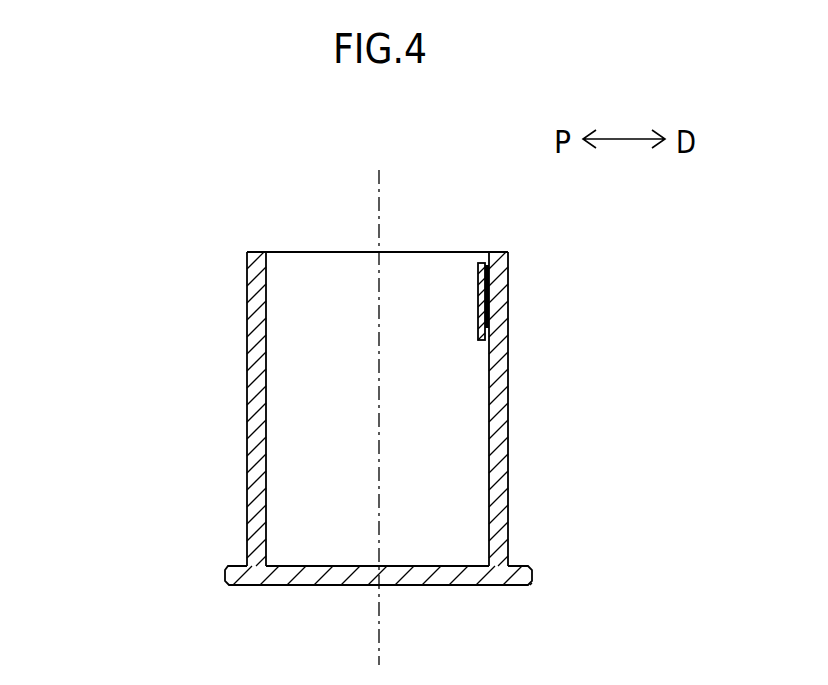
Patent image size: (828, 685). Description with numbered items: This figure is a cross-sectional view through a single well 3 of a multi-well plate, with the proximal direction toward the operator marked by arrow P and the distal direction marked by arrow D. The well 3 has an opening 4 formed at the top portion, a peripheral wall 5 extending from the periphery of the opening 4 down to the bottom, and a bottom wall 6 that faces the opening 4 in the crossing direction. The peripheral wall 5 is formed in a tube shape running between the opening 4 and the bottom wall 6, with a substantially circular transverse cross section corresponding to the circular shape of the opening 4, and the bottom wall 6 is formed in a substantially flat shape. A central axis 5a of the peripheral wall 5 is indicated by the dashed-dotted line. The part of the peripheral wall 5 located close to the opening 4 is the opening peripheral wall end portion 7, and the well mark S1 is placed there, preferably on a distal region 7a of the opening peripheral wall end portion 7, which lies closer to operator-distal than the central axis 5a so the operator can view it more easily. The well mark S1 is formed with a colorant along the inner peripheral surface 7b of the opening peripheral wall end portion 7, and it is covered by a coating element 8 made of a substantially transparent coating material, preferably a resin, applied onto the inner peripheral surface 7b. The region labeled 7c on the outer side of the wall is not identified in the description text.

The well 3 is at (247, 252).
The opening 4 is at (268, 261).
The peripheral wall 5 is at (353, 446).
The central axis 5a is at (378, 212).
The bottom wall 6 is at (320, 566).
The opening peripheral wall end portion 7 is at (247, 303).
The distal region 7a is at (500, 324).
The inner peripheral surface 7b is at (489, 258).
The outer peripheral surface 7c is at (508, 267).
The coating element 8 is at (477, 300).
The well mark S1 is at (489, 288).